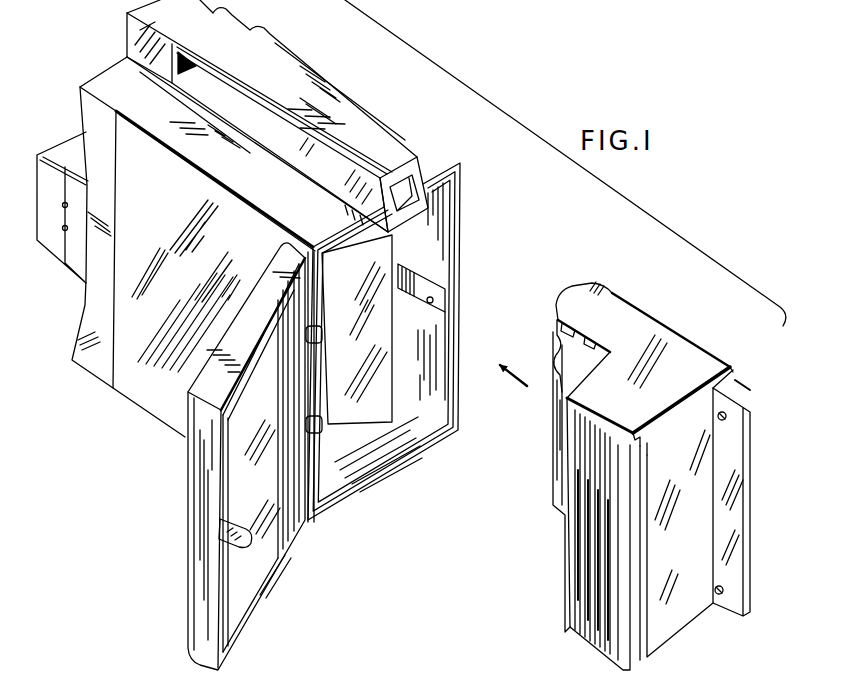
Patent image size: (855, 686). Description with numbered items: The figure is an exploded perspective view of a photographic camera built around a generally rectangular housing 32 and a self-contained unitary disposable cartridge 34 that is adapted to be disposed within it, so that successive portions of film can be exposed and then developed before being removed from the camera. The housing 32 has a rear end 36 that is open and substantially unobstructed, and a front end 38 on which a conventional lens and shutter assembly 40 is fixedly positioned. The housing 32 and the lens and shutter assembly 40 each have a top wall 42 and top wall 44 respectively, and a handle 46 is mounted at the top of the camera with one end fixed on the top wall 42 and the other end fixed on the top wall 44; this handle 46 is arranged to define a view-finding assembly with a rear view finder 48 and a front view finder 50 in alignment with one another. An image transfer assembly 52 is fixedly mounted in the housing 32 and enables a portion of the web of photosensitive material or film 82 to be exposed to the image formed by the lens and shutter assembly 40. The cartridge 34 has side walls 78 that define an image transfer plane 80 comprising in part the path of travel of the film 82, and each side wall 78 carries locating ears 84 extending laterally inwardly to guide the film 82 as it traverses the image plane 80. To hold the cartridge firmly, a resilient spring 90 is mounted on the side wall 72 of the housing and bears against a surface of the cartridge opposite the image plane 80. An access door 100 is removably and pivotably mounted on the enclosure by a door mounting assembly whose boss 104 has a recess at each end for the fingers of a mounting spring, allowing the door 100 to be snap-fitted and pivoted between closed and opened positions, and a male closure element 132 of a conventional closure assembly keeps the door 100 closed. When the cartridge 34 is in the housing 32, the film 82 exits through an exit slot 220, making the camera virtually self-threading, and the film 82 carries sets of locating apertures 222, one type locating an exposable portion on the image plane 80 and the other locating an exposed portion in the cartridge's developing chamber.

The housing 32 is at (274, 116).
The self-contained unitary disposable cartridge 34 is at (662, 313).
The rear end 36 is at (452, 231).
The front end 38 is at (143, 100).
The lens and shutter assembly 40 is at (75, 337).
The top wall of housing 42 is at (310, 64).
The top wall of lens and shutter assembly 44 is at (247, 26).
The handle 46 is at (285, 94).
The rear view finder 48 is at (405, 188).
The front view finder 50 is at (127, 32).
The image transfer assembly 52 is at (360, 430).
The side wall of housing 72 is at (444, 332).
The side walls of cartridge 78 is at (639, 472).
The image transfer plane 80 is at (553, 338).
The photosensitive material or film 82 is at (552, 430).
The locating ears 84 is at (598, 333).
The spring 90 is at (437, 300).
The access door 100 is at (243, 456).
The boss 104 is at (312, 378).
The male closure element 132 is at (240, 524).
The exit slot 220 is at (727, 390).
The locating apertures 222 is at (731, 412).